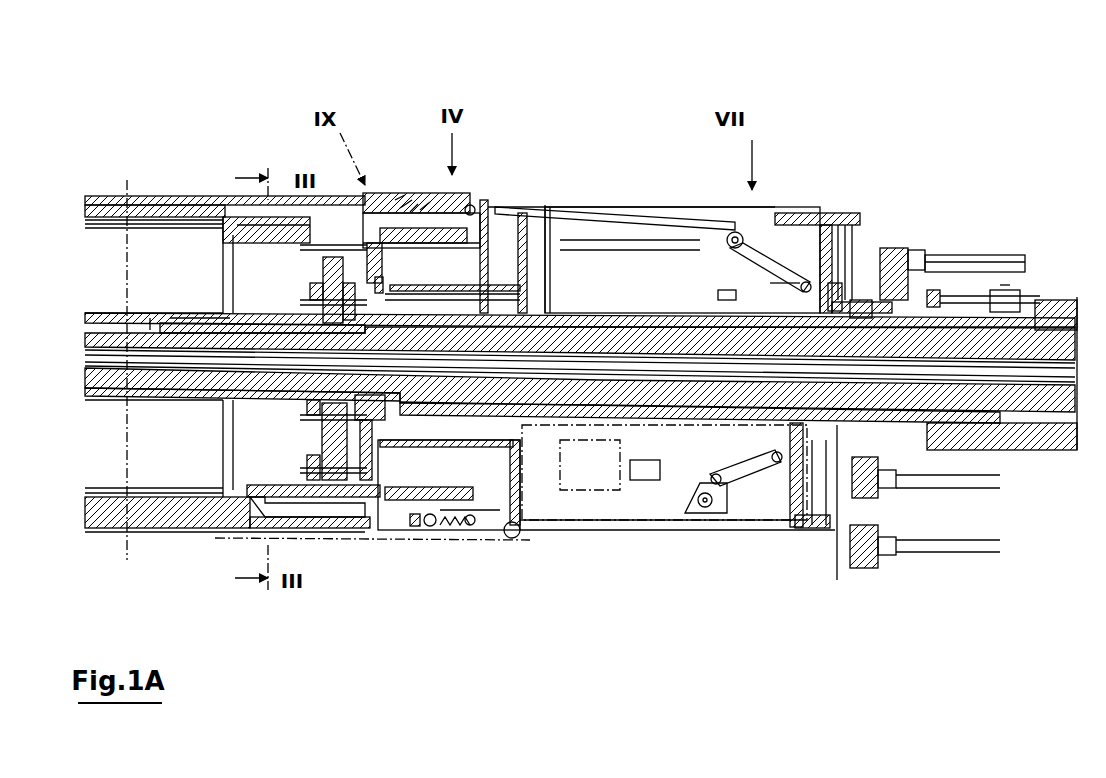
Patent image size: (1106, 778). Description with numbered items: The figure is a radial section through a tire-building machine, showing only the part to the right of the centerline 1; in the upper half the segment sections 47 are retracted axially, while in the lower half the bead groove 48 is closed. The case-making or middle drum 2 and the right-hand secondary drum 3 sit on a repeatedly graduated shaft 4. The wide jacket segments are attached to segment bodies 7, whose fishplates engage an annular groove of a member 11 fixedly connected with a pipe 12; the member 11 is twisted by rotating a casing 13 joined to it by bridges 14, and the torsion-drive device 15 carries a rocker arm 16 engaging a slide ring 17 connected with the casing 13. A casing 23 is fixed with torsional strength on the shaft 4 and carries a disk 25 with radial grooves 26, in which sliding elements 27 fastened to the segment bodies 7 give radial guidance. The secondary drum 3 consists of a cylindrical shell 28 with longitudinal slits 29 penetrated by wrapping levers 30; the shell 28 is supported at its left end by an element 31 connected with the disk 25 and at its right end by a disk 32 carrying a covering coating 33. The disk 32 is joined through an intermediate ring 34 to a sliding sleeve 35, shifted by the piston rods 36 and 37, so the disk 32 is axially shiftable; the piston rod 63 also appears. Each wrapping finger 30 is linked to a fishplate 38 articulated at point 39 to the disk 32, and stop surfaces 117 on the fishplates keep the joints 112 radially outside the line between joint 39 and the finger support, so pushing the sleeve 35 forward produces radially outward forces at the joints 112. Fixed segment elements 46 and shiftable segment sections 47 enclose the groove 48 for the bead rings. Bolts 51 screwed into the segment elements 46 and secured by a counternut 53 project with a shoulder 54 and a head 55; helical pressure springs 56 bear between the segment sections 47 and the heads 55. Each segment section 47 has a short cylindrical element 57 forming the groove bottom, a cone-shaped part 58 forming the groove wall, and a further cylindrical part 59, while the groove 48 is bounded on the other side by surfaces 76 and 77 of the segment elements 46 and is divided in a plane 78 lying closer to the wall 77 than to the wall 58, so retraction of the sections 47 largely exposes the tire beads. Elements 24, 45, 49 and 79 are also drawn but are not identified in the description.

The centerline 1 is at (130, 200).
The case making drum 2 is at (270, 148).
The secondary drum 3 is at (612, 190).
The shaft 4 is at (587, 330).
The segment bodies 7 is at (290, 240).
The member 11 is at (305, 427).
The pipe 12 is at (155, 445).
The casing 13 is at (633, 318).
The bridges 14 is at (385, 410).
The device 15 is at (1072, 292).
The rocker arm 16 is at (955, 300).
The slide ring 17 is at (1010, 290).
The casing 23 is at (197, 318).
The bearing 24 is at (150, 318).
The disk 25 is at (385, 272).
The radial grooves 26 is at (395, 297).
The sliding elements 27 is at (382, 262).
The cylindrical shell 28 is at (800, 215).
The longitudinal slits 29 is at (695, 205).
The wrapping levers 30 is at (550, 200).
The element 31 is at (520, 285).
The disk 32 is at (850, 215).
The gliding or covering coating 33 is at (838, 215).
The intermediate ring 34 is at (860, 215).
The sliding sleeve 35 is at (837, 580).
The piston rod 36 is at (938, 495).
The piston rod 37 is at (978, 263).
The fishplate 38 is at (770, 210).
The point 39 is at (770, 285).
The pin 45 is at (415, 207).
The segment elements 46 is at (157, 532).
The segment sections 47 is at (415, 545).
The groove 48 is at (398, 545).
The wall 49 is at (480, 545).
The bolt 51 is at (455, 545).
The counternut 53 is at (362, 545).
The shoulder 54 is at (470, 545).
The head 55 is at (505, 540).
The helical pressure springs 56 is at (495, 205).
The short cylindrical element 57 is at (418, 210).
The cone-shaped part 58 is at (435, 205).
The cylindrical part 59 is at (470, 205).
The piston rod 63 is at (1044, 373).
The surface 76 is at (410, 202).
The groove wall 77 is at (405, 198).
The plane 78 is at (440, 545).
The actuator 79 is at (570, 530).
The joints 112 is at (722, 205).
The stop surfaces 117 is at (840, 275).